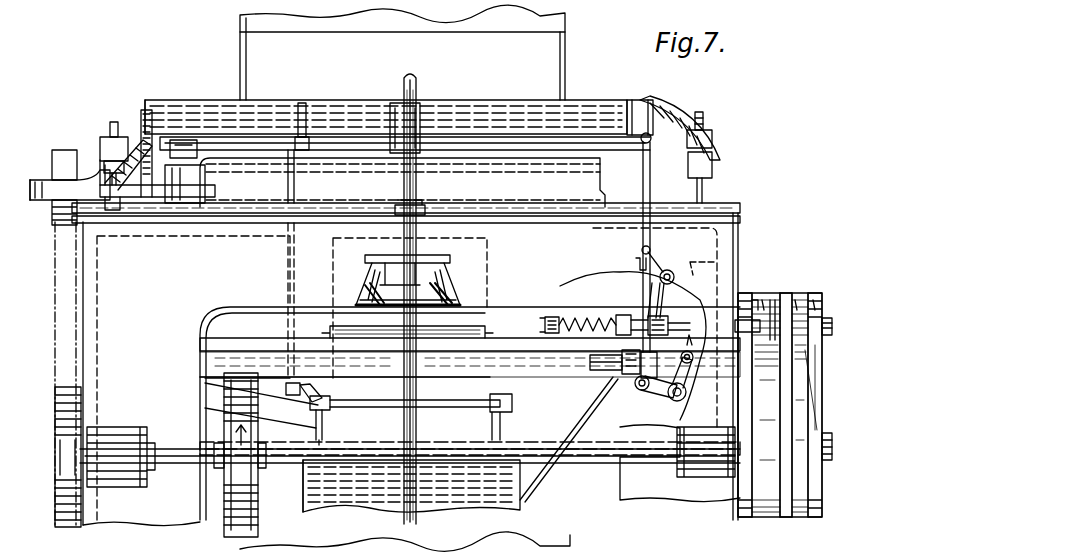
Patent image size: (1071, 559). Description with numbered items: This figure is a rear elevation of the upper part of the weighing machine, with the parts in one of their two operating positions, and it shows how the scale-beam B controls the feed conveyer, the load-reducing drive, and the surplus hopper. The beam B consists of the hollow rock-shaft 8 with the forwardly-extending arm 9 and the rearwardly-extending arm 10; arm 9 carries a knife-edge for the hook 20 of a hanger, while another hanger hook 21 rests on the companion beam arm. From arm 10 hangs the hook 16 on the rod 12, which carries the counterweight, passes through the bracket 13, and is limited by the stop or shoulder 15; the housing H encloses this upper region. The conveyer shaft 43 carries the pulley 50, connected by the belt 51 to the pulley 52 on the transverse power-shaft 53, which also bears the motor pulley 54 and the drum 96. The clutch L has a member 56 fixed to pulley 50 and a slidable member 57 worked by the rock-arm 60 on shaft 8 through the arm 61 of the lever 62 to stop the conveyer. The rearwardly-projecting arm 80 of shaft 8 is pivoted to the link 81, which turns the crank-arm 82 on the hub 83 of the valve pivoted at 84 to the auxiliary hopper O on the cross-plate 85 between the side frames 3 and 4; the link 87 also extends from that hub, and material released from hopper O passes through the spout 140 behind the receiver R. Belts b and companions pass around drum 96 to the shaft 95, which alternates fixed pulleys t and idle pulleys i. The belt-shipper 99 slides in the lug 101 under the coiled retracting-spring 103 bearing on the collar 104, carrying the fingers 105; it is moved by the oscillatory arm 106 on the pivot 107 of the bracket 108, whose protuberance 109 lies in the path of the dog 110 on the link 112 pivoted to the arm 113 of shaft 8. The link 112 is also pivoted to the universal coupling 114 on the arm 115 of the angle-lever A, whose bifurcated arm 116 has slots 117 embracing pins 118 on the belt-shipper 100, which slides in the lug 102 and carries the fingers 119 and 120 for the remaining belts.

The housing H is at (402, 52).
The scale-beam B is at (405, 113).
The hollow shaft 8 is at (486, 106).
The oppositely-disposed arm 10 is at (420, 128).
The hook 16 is at (408, 96).
The rearwardly-projecting arm 80 is at (300, 128).
The arm 113 is at (640, 108).
The rock-arm 60 is at (145, 157).
The arm 61 is at (182, 190).
The shaft 43 is at (178, 202).
The lever 62 is at (128, 197).
The stop or shoulder 15 is at (415, 214).
The belt 51 is at (78, 300).
The side frame 4 is at (148, 518).
The clutch L is at (70, 175).
The clutch member 56 is at (95, 185).
The pulley 50 is at (65, 150).
The clutch-section 57 is at (100, 160).
The hook 21 is at (110, 128).
The link 81 is at (294, 190).
The parallel arm 9 is at (652, 145).
The link 112 is at (708, 140).
The hook 20 is at (700, 114).
The pivot 107 is at (644, 248).
The belt-shipper actuator 110 is at (660, 270).
The protuberance 109 is at (662, 282).
The bracket 108 is at (692, 262).
The oscillatory arm 106 is at (680, 302).
The pin 118 is at (690, 345).
The stop or collar 104 is at (545, 325).
The coiled retracting-spring 103 is at (580, 320).
The apertured lug or guide 101 is at (622, 318).
The belt-shipper 99 is at (577, 318).
The belt-shipper 100 is at (590, 362).
The apertured lug or guide 102 is at (628, 368).
The universal coupling device 114 is at (640, 382).
The arm 115 is at (655, 390).
The angle-lever A is at (669, 401).
The arm 116 is at (688, 385).
The longitudinal slot 117 is at (690, 362).
The auxiliary receiver or hopper O is at (470, 413).
The cross-plate 85 is at (468, 342).
The longitudinal rod or bar 12 is at (414, 365).
The link 87 is at (262, 396).
The crank-arm 82 is at (300, 390).
The hub 83 is at (320, 394).
The pivot 84 is at (330, 404).
The bracket 13 is at (425, 260).
The transverse power-shaft 53 is at (176, 462).
The pulley 52 is at (68, 418).
The pulley 54 is at (224, 518).
The spout 140 is at (366, 503).
The receiver or hopper R is at (569, 439).
The side frame 3 is at (678, 494).
The power transmitter or drum 96 is at (770, 518).
The belt b is at (745, 518).
The shaft 95 is at (830, 319).
The belt-engaging finger 120 is at (822, 425).
The belt-engaging finger 119 is at (745, 325).
The belt-engaging fingers 105 is at (776, 300).
The loose or idle pulley i is at (750, 296).
The fixed pulley t is at (762, 300).